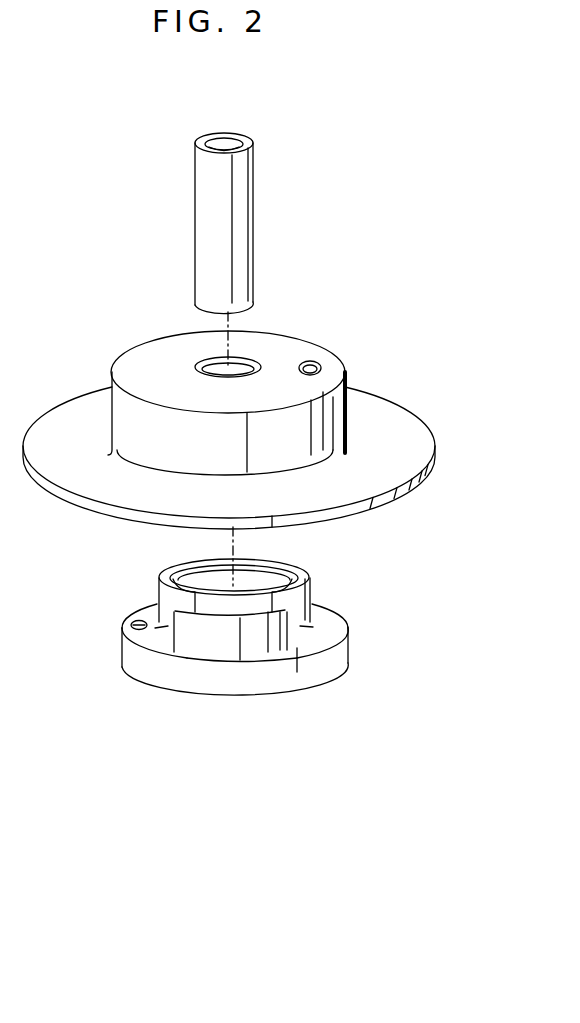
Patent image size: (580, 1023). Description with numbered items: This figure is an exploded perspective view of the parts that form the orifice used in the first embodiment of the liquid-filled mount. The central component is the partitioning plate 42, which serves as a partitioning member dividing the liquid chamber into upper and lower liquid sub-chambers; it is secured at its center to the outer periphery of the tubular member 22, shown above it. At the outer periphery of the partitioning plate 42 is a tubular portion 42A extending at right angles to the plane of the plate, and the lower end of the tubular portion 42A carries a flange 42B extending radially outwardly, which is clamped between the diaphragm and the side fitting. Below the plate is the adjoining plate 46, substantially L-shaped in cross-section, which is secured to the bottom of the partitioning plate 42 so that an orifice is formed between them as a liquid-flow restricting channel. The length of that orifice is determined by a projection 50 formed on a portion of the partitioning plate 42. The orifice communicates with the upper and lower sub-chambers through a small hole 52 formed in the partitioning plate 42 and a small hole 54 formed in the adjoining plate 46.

The tubular member 22 is at (243, 208).
The partitioning plate 42 is at (290, 355).
The tubular portion 42A is at (333, 412).
The flange 42B is at (406, 447).
The adjoining plate 46 is at (288, 576).
The projection 50 is at (268, 636).
The small hole 52 is at (319, 365).
The small hole 54 is at (140, 622).